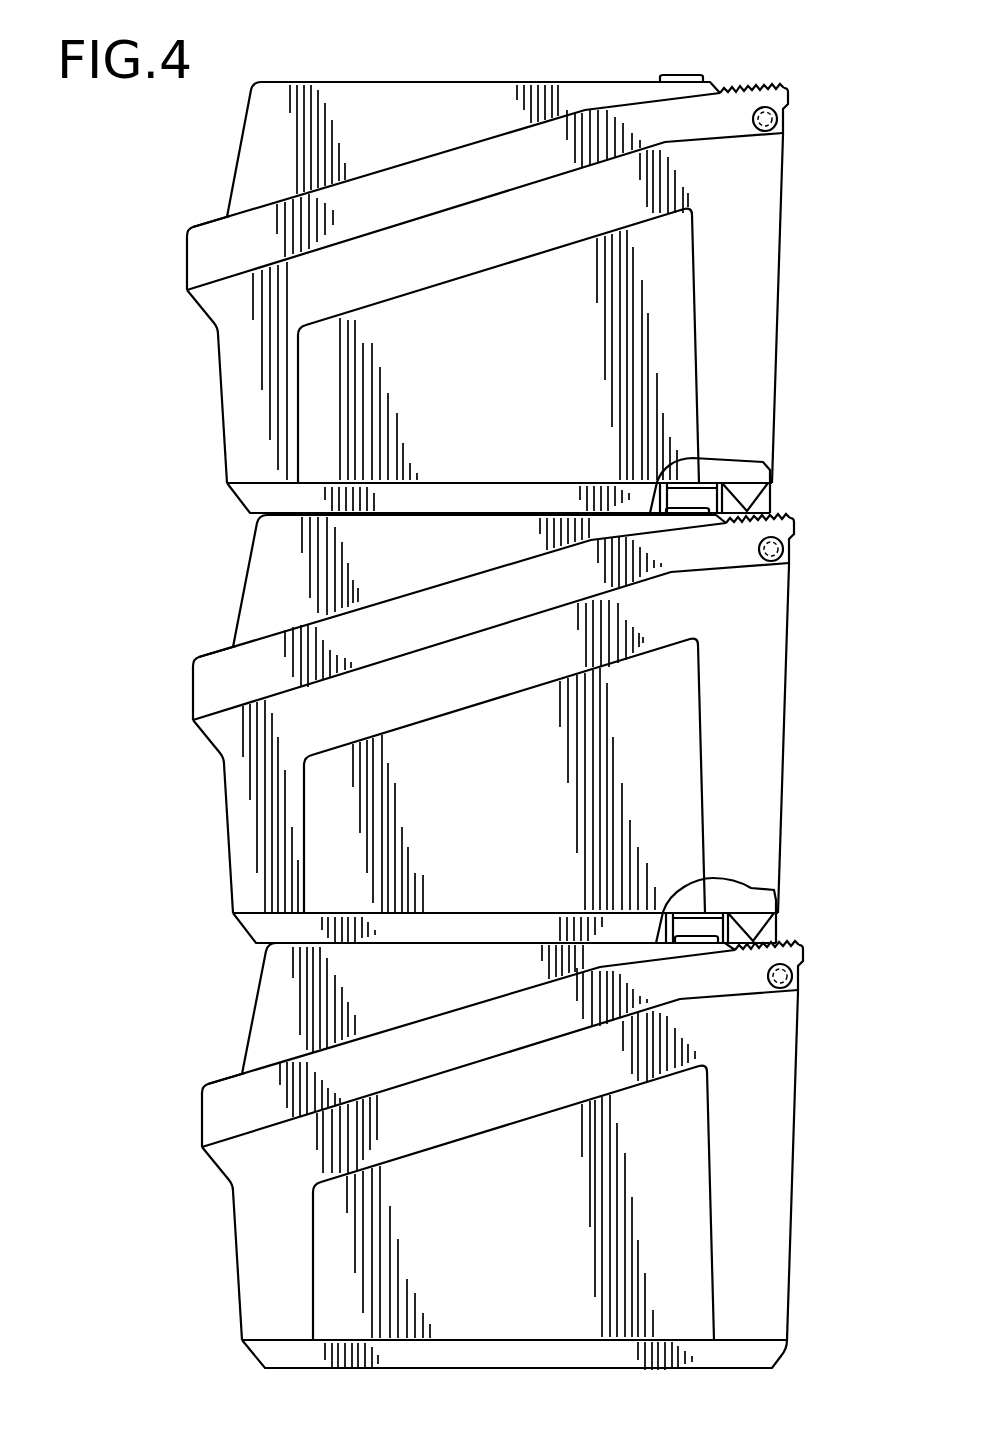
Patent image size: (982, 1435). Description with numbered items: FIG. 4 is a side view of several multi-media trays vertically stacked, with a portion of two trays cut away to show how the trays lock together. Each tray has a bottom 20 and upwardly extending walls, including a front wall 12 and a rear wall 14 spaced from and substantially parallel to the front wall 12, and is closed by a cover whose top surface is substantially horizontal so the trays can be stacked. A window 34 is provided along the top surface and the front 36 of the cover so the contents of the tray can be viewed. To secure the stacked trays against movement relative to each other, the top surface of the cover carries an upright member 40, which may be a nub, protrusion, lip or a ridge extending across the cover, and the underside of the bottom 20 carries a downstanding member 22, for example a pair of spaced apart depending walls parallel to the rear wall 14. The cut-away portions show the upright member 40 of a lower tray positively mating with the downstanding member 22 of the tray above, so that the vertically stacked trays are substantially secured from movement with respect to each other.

The front wall 12 is at (221, 408).
The rear wall 14 is at (782, 215).
The bottom 20 is at (531, 1361).
The downstanding member 22 is at (665, 480).
The window 34 is at (388, 83).
The front 36 is at (186, 258).
The upright member 40 is at (688, 77).